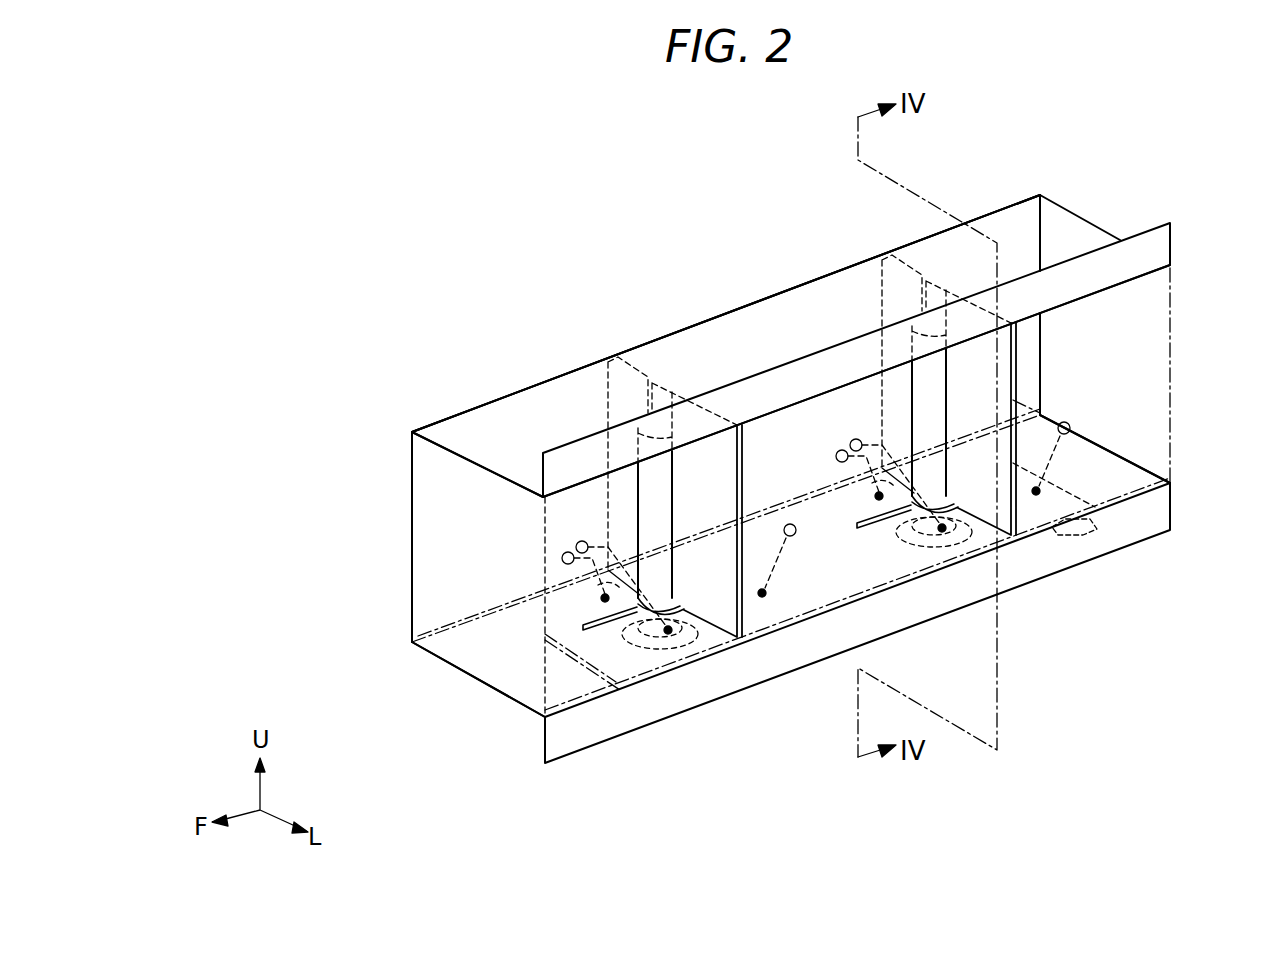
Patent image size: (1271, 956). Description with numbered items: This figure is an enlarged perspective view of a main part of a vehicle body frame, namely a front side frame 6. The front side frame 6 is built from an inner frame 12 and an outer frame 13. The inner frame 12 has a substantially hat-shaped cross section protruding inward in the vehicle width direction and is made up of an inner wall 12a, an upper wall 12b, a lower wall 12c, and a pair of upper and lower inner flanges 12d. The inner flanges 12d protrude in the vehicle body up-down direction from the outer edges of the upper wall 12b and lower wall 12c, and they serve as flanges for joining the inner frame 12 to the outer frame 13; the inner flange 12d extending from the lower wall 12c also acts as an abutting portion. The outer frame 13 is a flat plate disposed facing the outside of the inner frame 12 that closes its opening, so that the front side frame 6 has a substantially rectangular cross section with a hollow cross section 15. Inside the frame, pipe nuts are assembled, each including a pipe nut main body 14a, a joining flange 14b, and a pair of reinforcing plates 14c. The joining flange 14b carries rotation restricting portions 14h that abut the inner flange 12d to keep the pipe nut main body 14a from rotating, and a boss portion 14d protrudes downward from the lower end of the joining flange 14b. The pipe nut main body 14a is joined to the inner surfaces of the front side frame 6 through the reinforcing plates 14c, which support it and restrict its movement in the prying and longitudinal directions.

The front side frame 6 is at (560, 278).
The inner frame 12 is at (760, 290).
The inner wall 12a is at (412, 522).
The upper wall 12b is at (505, 425).
The lower wall 12c is at (440, 665).
The inner flange 12d is at (585, 463).
The outer frame 13 is at (1172, 372).
The pipe nut main body 14a is at (640, 522).
The joining flange 14b is at (632, 645).
The reinforcing plate 14c is at (693, 617).
The boss portion 14d is at (673, 660).
The rotation restricting portion 14h is at (1085, 540).
The hollow cross section 15 is at (481, 548).